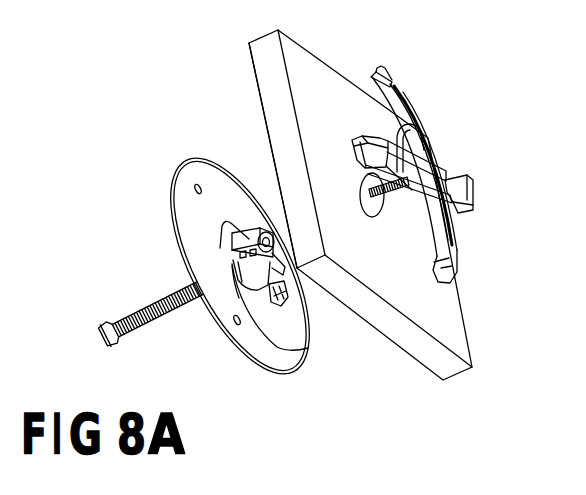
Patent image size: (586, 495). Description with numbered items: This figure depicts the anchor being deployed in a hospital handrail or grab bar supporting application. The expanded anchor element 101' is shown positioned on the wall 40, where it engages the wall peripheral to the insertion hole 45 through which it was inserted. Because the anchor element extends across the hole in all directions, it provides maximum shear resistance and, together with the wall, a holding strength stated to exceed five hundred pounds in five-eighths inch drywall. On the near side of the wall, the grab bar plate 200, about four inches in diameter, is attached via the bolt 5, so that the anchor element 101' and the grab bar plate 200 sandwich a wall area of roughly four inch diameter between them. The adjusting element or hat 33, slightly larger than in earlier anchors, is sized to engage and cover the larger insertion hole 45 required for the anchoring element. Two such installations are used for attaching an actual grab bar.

The bolt 5 is at (177, 313).
The adjusting element or hat 33 is at (306, 349).
The wall 40 is at (350, 80).
The insertion hole 45 is at (388, 214).
The anchor element 101' is at (447, 174).
The grab bar plate 200 is at (203, 160).